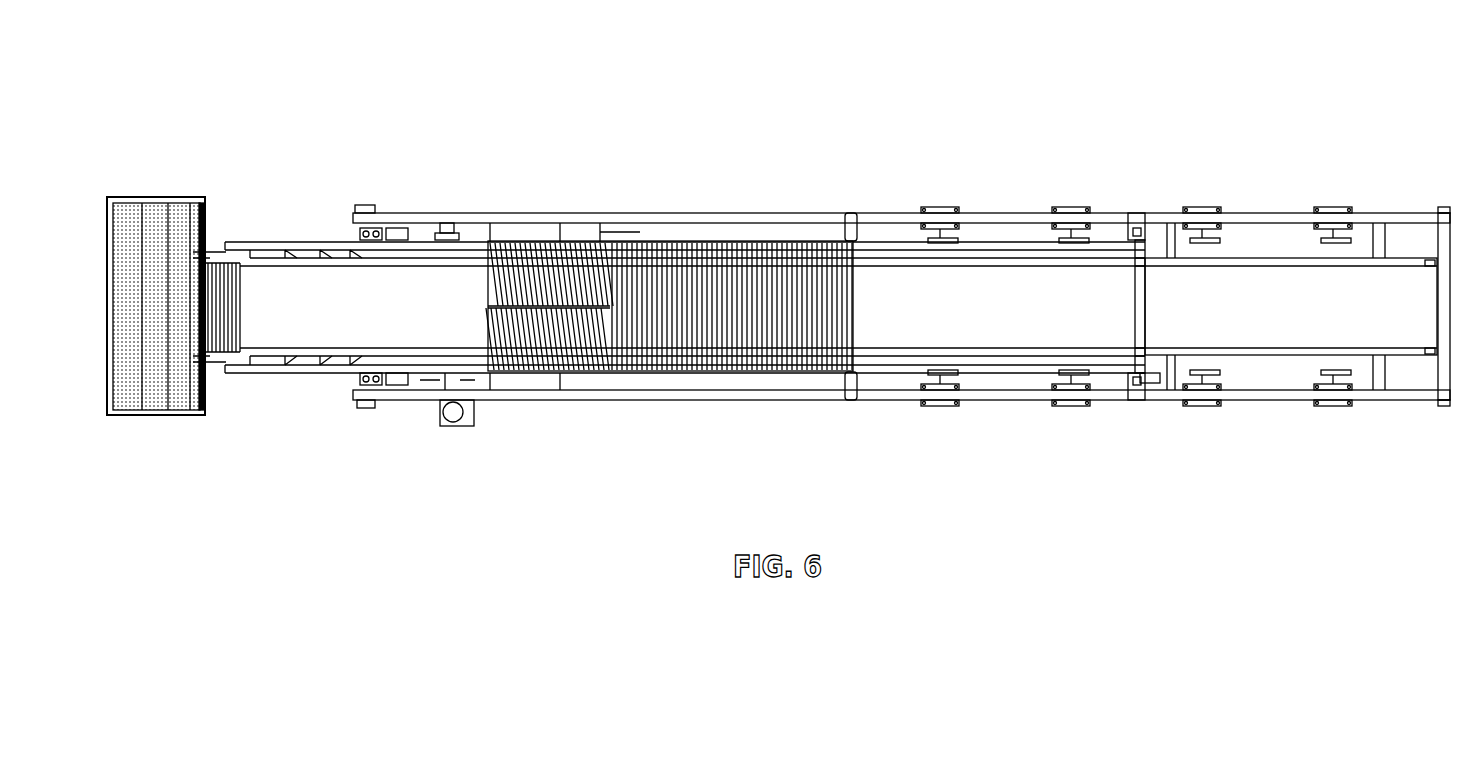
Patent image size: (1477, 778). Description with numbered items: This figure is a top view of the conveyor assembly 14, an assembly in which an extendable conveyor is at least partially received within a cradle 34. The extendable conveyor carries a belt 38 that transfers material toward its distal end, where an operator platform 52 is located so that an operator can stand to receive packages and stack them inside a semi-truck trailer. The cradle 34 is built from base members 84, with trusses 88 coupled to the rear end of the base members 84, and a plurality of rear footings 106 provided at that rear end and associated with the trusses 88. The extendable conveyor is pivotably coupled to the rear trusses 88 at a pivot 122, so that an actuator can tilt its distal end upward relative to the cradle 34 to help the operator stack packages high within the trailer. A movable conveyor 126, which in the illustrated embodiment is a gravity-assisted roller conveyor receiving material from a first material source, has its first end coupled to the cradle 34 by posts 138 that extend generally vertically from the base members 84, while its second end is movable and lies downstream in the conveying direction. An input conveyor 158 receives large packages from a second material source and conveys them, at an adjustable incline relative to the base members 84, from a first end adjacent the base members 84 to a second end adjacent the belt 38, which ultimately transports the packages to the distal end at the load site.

The conveyor assembly 14 is at (212, 74).
The operator platform 52 is at (136, 228).
The belt 38 is at (315, 283).
The movable conveyor 126 is at (712, 255).
The base members 84 is at (805, 225).
The cradle 34 is at (820, 395).
The posts 138 is at (851, 207).
The rear footings 106 is at (936, 206).
The trusses 88 is at (1136, 207).
The pivot 122 is at (1148, 385).
The input conveyor 158 is at (1268, 330).